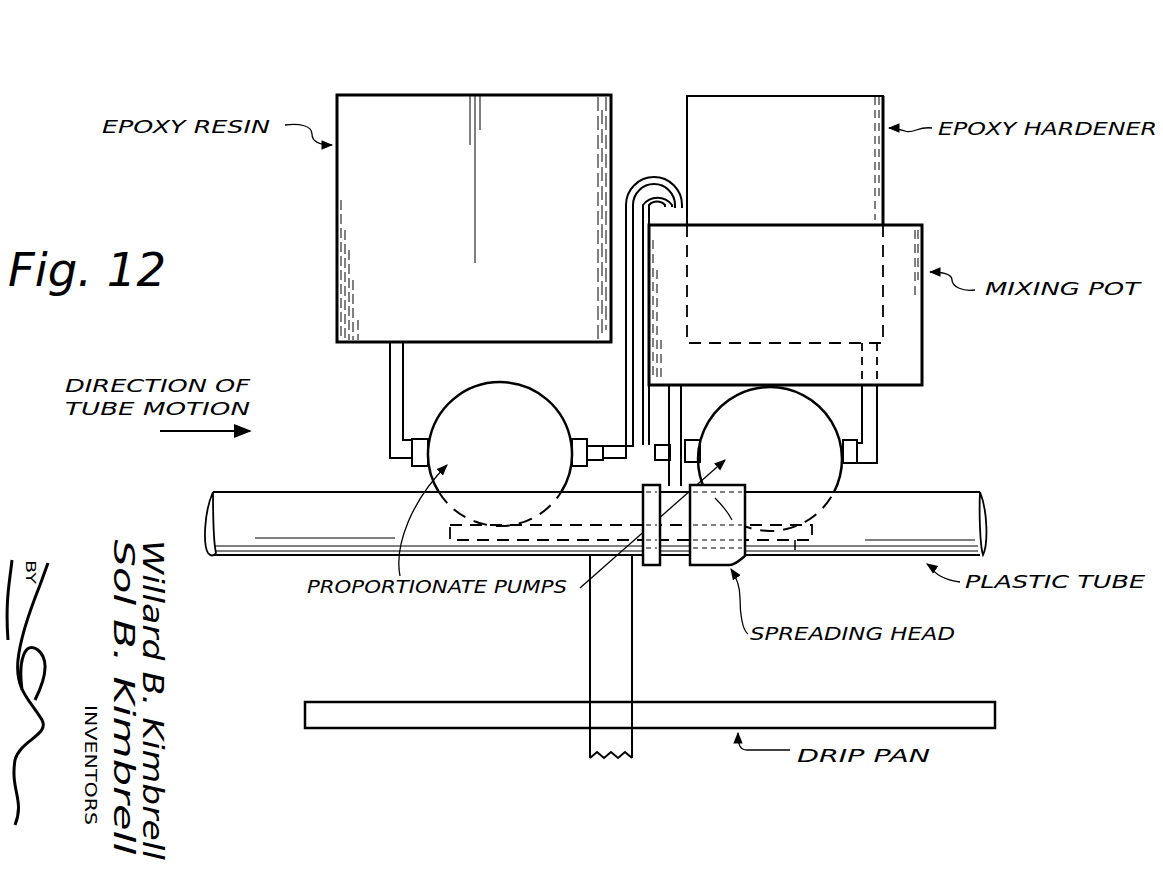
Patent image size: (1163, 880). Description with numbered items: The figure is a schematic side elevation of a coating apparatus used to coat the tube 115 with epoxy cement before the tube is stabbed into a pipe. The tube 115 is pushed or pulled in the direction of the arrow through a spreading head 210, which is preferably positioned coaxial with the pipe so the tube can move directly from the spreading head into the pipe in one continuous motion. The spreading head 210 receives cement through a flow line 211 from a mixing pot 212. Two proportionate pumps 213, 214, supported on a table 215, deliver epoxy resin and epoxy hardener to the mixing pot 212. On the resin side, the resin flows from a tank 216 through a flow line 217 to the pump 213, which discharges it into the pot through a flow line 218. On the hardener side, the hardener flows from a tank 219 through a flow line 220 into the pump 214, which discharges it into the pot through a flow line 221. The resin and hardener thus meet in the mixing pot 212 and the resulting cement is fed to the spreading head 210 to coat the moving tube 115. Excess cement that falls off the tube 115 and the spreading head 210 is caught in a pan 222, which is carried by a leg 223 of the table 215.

The tube 115 is at (935, 497).
The spreading head 210 is at (700, 565).
The flow line 211 is at (682, 412).
The mixing pot 212 is at (905, 328).
The proportionate pump 213 is at (493, 400).
The proportionate pump 214 is at (800, 471).
The table 215 is at (797, 552).
The tank 216 is at (337, 198).
The flow line 217 is at (390, 357).
The flow line 218 is at (626, 378).
The tank 219 is at (855, 172).
The flow line 220 is at (870, 414).
The flow line 221 is at (645, 462).
The pan 222 is at (850, 718).
The leg 223 is at (600, 670).